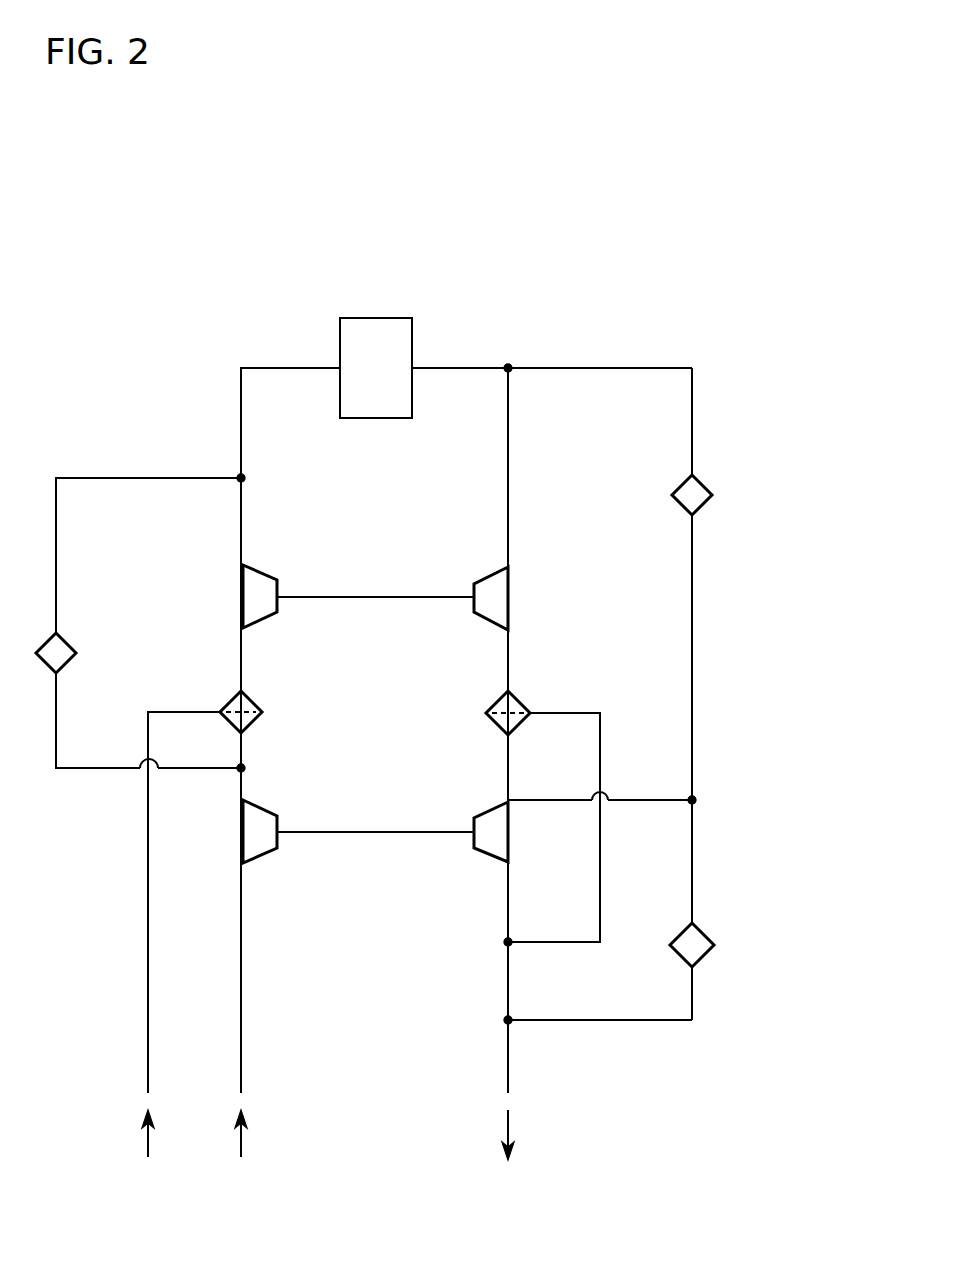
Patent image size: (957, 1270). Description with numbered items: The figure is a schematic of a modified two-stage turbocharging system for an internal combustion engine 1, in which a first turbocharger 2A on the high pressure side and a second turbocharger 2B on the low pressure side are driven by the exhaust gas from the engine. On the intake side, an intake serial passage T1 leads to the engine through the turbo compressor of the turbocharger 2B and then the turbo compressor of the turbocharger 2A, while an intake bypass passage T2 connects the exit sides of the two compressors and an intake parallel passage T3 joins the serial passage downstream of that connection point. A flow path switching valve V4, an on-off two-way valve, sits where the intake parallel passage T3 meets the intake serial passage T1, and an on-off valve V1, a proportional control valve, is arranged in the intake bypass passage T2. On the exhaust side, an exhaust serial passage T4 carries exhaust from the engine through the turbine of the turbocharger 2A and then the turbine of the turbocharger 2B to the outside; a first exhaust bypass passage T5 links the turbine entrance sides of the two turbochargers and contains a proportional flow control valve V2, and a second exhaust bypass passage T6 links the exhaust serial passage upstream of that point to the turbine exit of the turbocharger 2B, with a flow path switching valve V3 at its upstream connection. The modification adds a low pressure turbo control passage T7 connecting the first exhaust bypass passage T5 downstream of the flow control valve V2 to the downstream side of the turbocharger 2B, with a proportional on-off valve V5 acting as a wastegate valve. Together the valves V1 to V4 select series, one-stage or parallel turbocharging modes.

The internal combustion engine 1 is at (378, 318).
The first turbocharger 2A is at (373, 599).
The second turbocharger 2B is at (365, 834).
The intake serial passage T1 is at (243, 502).
The intake bypass passage T2 is at (58, 563).
The intake parallel passage T3 is at (150, 850).
The exhaust serial passage T4 is at (506, 500).
The first exhaust bypass passage T5 is at (694, 656).
The second exhaust bypass passage T6 is at (602, 868).
The low pressure turbo control passage T7 is at (613, 1021).
The on-off valve V1 is at (68, 666).
The flow control valve V2 is at (708, 483).
The flow path switching valve V3 is at (520, 696).
The flow path switching valve V4 is at (256, 722).
The proportional on-off valve V5 is at (708, 933).